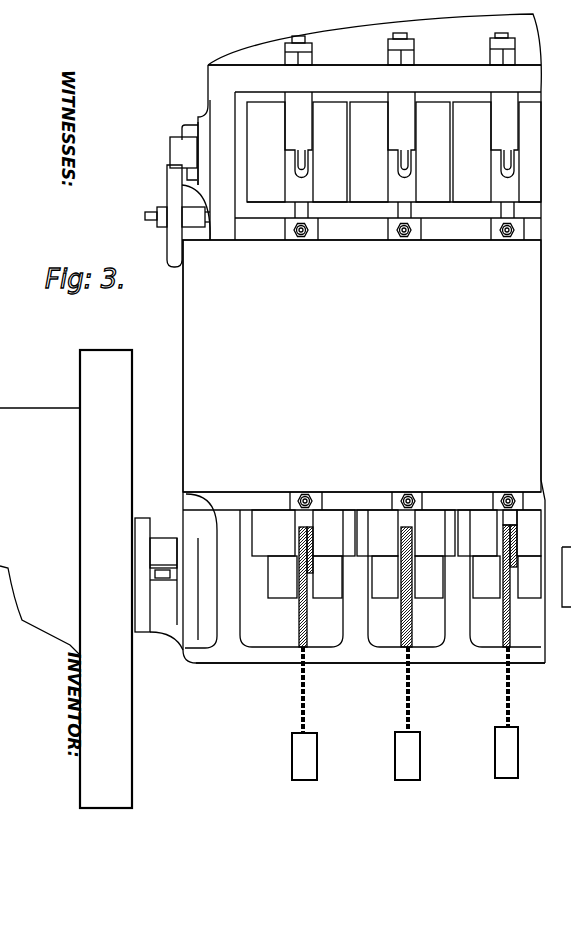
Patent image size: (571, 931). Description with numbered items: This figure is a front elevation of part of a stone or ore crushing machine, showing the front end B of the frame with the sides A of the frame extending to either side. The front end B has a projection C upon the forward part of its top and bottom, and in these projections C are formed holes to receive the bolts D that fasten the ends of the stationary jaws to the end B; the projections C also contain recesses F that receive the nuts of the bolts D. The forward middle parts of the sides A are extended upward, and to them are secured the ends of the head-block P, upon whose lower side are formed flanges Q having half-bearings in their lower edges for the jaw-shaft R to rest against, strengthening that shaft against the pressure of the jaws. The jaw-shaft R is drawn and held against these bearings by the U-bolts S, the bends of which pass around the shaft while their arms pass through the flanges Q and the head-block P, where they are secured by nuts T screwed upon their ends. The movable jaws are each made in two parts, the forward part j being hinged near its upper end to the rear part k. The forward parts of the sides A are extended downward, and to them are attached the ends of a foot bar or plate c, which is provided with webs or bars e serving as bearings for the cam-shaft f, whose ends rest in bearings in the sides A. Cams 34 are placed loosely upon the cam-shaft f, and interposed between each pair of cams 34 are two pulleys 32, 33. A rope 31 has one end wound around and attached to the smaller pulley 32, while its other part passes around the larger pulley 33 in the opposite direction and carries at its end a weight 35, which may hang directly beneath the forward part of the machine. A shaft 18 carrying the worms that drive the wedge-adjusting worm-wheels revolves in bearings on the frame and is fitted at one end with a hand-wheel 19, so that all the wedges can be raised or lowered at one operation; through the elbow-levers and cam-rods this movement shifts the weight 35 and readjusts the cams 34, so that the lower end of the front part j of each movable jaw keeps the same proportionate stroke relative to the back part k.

The sides of the frame A is at (347, 392).
The front end of the frame B is at (362, 366).
The projection C is at (361, 370).
The bolt D is at (299, 238).
The recess F is at (313, 240).
The head-block P is at (374, 78).
The flange Q is at (401, 135).
The jaw-shaft R is at (306, 158).
The U-bolt S is at (300, 172).
The nut T is at (313, 54).
The rear part of the movable jaw k is at (394, 152).
The forward part of the movable jaw j is at (396, 533).
The webs or bars e is at (390, 578).
The foot bar or plate c is at (370, 655).
The cam-shaft f is at (163, 581).
The shaft 18 is at (170, 216).
The hand-wheel 19 is at (166, 216).
The rope 31 is at (411, 629).
The smaller pulley 32 is at (312, 528).
The larger pulley 33 is at (509, 518).
The cam 34 is at (404, 577).
The weight 35 is at (299, 523).